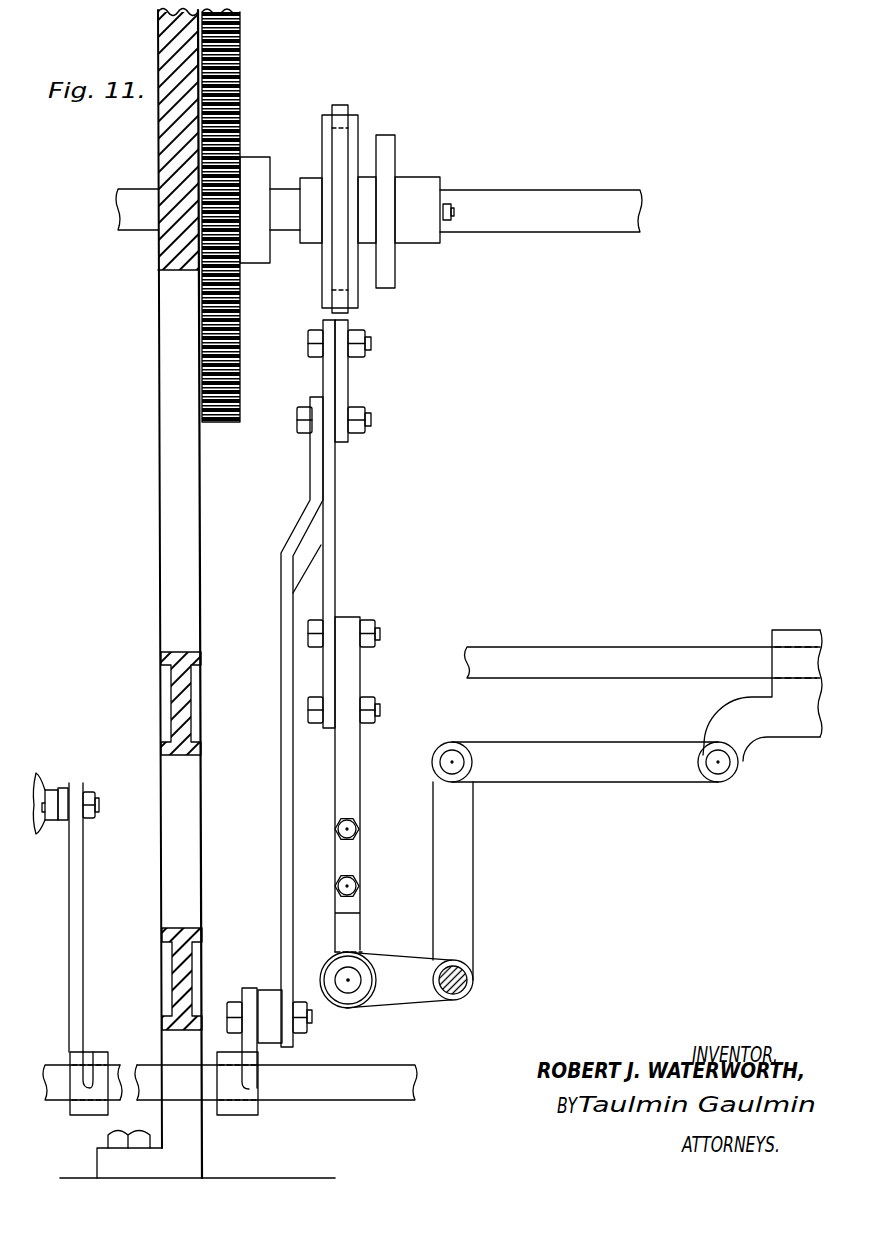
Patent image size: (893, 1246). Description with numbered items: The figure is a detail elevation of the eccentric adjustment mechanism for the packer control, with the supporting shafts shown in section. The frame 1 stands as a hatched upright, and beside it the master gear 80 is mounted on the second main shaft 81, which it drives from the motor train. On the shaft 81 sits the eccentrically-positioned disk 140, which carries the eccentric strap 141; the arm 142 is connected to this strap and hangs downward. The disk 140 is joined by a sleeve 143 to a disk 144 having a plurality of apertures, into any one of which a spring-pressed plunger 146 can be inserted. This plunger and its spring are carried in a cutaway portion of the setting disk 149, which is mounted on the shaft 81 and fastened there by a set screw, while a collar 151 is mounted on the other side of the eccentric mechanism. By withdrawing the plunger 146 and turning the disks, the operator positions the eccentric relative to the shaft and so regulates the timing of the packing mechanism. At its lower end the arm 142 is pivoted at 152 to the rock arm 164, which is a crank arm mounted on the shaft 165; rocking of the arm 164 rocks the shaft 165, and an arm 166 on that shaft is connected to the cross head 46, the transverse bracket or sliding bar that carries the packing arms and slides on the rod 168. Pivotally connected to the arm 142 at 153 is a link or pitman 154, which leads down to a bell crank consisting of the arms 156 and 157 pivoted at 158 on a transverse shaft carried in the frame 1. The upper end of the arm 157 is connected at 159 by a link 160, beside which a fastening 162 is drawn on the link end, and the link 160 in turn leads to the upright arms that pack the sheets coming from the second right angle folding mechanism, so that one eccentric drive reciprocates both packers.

The frame 1 is at (162, 635).
The cross head 46 is at (790, 638).
The master gear 80 is at (240, 97).
The second main shaft 81 is at (575, 176).
The eccentric disk 140 is at (358, 115).
The eccentric strap 141 is at (343, 104).
The arm 142 is at (342, 386).
The sleeve 143 is at (368, 223).
The disk 144 is at (390, 143).
The spring-pressed plunger 146 is at (455, 207).
The setting disk 149 is at (433, 180).
The collar 151 is at (312, 183).
The pivotal mounting 152 is at (395, 959).
The pivot 153 is at (300, 432).
The pitman 154 is at (281, 824).
The bell crank arm 156 is at (258, 1090).
The bell crank arm 157 is at (83, 980).
The bell crank pivot 158 is at (132, 1068).
The connection 159 is at (117, 788).
The link 160 is at (64, 788).
The wing nut 162 is at (43, 778).
The rock arm 164 is at (328, 962).
The shaft 165 is at (465, 972).
The arm 166 is at (472, 920).
The rod 168 is at (650, 629).